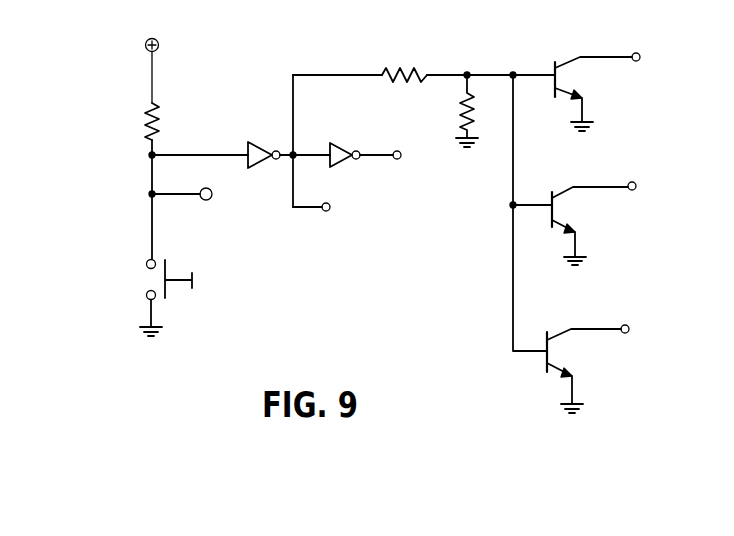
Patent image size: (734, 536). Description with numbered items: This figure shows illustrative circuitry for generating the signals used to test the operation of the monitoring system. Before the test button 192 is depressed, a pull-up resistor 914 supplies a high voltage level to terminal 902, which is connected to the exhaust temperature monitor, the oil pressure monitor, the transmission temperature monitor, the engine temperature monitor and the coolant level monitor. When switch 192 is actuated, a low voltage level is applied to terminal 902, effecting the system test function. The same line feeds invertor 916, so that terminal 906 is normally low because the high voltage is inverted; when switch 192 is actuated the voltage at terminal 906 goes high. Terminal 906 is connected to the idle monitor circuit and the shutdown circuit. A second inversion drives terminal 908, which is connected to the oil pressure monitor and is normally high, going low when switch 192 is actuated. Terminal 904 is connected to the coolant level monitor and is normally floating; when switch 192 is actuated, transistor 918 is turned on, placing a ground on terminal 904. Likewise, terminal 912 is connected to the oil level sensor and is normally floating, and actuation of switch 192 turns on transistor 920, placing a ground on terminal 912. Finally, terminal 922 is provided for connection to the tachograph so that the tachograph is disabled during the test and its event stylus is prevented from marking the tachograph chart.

The resistor 914 is at (160, 124).
The invertor 916 is at (274, 122).
The terminal 902 is at (210, 200).
The test button 192 is at (150, 281).
The terminal 906 is at (327, 212).
The terminal 908 is at (398, 160).
The transistor 918 is at (565, 80).
The terminal 904 is at (641, 59).
The transistor 920 is at (560, 208).
The terminal 912 is at (637, 186).
The terminal 922 is at (630, 328).